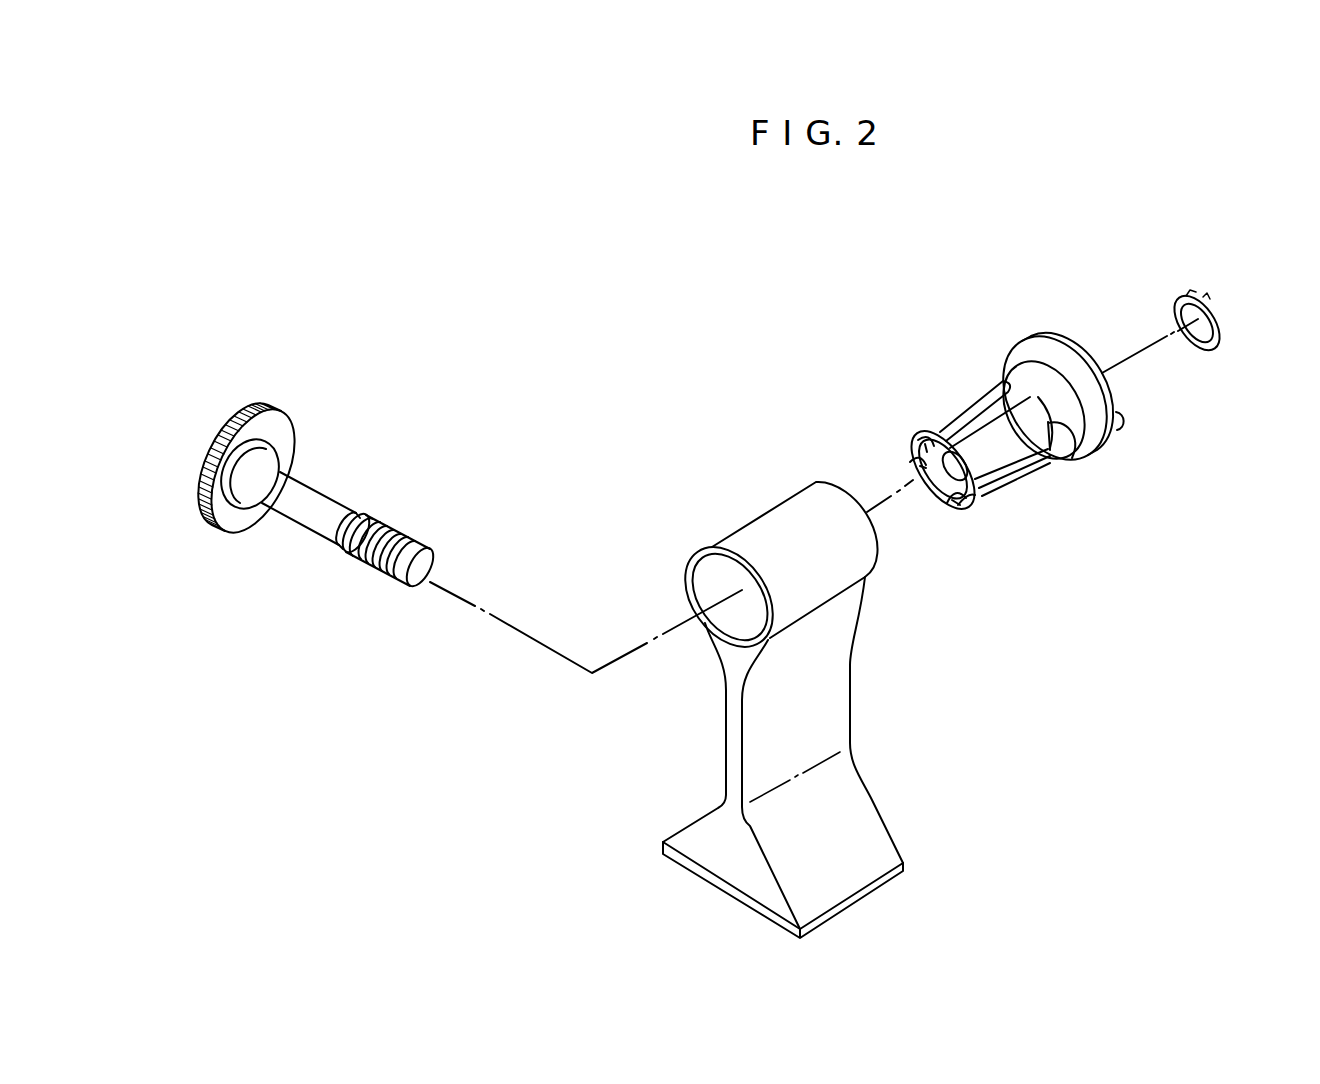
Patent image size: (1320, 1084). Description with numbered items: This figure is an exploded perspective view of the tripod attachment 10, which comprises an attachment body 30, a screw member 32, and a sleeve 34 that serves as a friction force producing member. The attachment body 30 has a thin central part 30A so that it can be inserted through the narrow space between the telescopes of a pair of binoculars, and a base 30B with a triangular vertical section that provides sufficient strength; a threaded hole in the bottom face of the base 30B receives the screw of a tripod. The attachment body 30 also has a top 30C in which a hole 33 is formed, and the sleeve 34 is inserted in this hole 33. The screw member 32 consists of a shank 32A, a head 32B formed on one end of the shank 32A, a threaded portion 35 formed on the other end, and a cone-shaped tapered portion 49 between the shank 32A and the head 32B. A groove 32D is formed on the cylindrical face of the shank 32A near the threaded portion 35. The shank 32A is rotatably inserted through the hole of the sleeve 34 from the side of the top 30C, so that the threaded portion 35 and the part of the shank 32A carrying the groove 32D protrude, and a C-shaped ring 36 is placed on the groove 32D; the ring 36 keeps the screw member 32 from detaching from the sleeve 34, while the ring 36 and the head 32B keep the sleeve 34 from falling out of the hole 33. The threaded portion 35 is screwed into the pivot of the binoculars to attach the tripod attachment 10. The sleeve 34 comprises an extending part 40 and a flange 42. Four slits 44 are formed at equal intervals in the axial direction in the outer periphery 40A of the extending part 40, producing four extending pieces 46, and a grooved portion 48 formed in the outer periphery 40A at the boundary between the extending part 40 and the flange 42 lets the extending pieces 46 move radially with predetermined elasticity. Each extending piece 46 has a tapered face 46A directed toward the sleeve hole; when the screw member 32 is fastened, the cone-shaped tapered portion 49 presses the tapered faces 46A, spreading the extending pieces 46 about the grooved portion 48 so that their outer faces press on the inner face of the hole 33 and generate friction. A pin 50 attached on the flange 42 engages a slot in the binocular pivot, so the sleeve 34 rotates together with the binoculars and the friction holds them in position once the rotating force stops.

The tripod attachment 10 is at (662, 372).
The attachment body 30 is at (864, 698).
The central part 30A is at (757, 722).
The base 30B is at (723, 860).
The top 30C is at (787, 510).
The hole 33 is at (728, 618).
The screw member 32 is at (366, 458).
The shank 32A is at (333, 538).
The head 32B is at (272, 432).
The groove 32D is at (358, 522).
The threaded portion 35 is at (418, 552).
The cone-shaped tapered portion 49 is at (253, 500).
The sleeve 34 is at (1091, 229).
The extending part 40 is at (1021, 266).
The outer periphery 40A is at (996, 375).
The flange 42 is at (1082, 362).
The slits 44 is at (967, 405).
The extending pieces 46 is at (935, 427).
The tapered face 46A is at (924, 467).
The grooved portion 48 is at (1078, 430).
The pin 50 is at (1125, 417).
The C-shaped ring 36 is at (1218, 338).